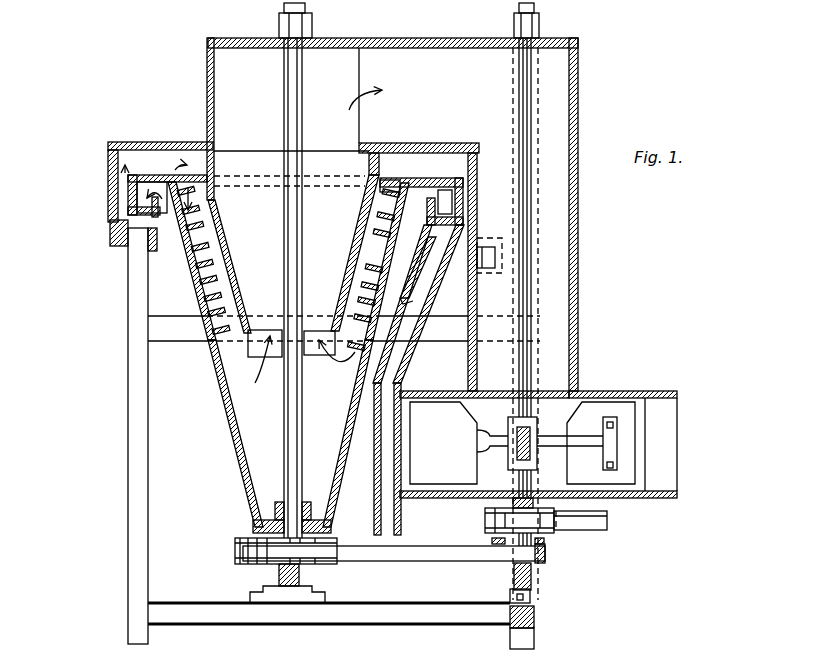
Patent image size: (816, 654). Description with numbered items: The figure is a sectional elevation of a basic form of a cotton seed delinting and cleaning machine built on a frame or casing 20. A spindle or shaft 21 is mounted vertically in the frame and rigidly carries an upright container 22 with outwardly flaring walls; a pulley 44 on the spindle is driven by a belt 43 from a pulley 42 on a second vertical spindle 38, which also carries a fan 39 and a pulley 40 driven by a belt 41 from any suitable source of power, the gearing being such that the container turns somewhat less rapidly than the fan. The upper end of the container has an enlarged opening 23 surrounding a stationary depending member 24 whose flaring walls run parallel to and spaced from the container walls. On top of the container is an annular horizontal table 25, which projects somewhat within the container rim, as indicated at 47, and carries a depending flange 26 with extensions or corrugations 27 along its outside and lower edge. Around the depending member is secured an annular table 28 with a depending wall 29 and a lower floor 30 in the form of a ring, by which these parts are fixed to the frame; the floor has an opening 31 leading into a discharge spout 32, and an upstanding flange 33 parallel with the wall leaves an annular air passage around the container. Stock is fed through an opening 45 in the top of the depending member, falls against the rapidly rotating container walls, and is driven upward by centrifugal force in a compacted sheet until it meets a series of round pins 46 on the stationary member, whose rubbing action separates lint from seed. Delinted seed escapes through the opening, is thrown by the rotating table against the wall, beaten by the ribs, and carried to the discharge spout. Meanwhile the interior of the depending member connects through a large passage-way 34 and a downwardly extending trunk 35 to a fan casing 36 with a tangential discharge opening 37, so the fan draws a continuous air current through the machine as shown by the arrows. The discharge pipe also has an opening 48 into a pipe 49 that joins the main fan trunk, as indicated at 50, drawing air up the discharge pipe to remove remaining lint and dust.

The frame or casing 20 is at (133, 365).
The spindle or shaft 21 is at (290, 455).
The container 22 is at (230, 431).
The opening 23 is at (197, 177).
The depending member 24 is at (218, 283).
The annular horizontal table 25 is at (143, 175).
The depending flange 26 is at (132, 212).
The extensions or corrugations 27 is at (128, 193).
The annular table 28 is at (152, 142).
The depending wall 29 is at (107, 160).
The lower floor 30 is at (128, 246).
The opening 31 is at (468, 227).
The discharge spout 32 is at (405, 350).
The flange 33 is at (152, 228).
The passage-way 34 is at (410, 38).
The trunk 35 is at (578, 331).
The fan casing 36 is at (602, 391).
The tangential discharge opening 37 is at (662, 500).
The spindle 38 is at (523, 277).
The fan 39 is at (611, 468).
The pulley 40 is at (554, 533).
The belt 41 is at (597, 524).
The pulley 42 is at (502, 564).
The belt 43 is at (368, 553).
The pulley 44 is at (240, 564).
The opening 45 is at (233, 37).
The round pins 46 is at (228, 335).
The projection of table within container 47 is at (415, 178).
The opening 48 is at (405, 296).
The pipe 49 is at (415, 258).
The connection to fan trunk 50 is at (490, 258).